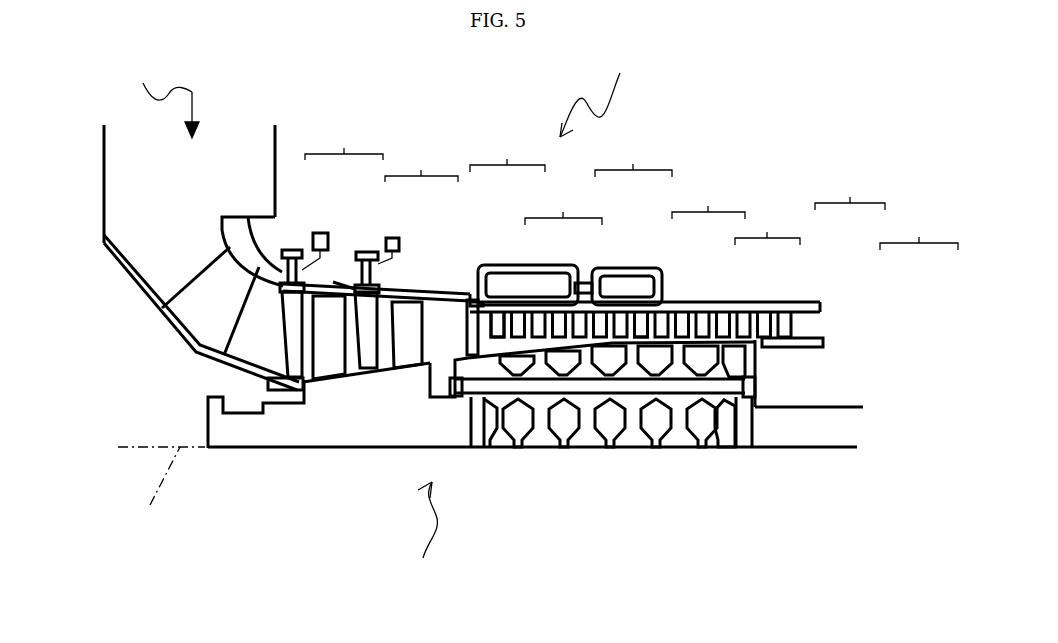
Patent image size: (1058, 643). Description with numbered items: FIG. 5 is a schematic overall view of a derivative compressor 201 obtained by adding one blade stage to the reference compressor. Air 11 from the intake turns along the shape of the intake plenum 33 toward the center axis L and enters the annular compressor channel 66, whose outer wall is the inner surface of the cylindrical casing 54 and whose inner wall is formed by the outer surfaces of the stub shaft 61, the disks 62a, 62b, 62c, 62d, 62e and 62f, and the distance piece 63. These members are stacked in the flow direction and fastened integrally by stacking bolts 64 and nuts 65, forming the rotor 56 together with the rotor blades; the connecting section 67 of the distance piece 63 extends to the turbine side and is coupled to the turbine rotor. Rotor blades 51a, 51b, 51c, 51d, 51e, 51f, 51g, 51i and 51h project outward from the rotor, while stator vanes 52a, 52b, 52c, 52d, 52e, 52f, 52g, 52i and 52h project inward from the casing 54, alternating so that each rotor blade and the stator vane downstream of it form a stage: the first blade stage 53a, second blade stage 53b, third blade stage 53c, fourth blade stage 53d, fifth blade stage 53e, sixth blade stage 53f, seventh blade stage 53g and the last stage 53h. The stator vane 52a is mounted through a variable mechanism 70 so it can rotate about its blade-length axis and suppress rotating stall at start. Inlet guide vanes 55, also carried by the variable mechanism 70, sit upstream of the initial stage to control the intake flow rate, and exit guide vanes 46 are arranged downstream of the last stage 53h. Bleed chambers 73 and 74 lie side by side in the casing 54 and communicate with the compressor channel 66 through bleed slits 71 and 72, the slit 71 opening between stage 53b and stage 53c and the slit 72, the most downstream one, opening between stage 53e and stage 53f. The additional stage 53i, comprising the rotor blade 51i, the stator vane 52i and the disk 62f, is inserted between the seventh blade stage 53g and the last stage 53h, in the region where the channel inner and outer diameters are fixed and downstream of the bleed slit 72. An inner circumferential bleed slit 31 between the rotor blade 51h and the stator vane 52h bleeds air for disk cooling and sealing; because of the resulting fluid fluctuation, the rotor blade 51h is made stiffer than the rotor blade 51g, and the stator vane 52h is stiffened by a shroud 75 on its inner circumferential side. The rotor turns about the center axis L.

The air 11 is at (163, 100).
The turbine 201 is at (605, 93).
The intake plenum 33 is at (104, 185).
The first blade stage 53a is at (333, 252).
The second blade stage 53b is at (407, 257).
The third blade stage 53c is at (507, 238).
The fourth blade stage 53d is at (563, 263).
The fifth blade stage 53e is at (622, 239).
The sixth blade stage 53f is at (679, 260).
The seventh blade stage 53g is at (727, 274).
The additional stage 53i is at (790, 256).
The eighth blade stage 53h is at (847, 278).
The rotor blade 51a is at (295, 292).
The rotor blade 51b is at (368, 293).
The rotor blade 51c is at (498, 316).
The rotor blade 51d is at (539, 316).
The rotor blade 51e is at (580, 316).
The rotor blade 51f is at (621, 316).
The rotor blade 51g is at (662, 316).
The rotor blade 51i is at (703, 316).
The rotor blade 51h is at (744, 316).
The stator vane 52a is at (330, 296).
The stator vane 52b is at (408, 302).
The stator vane 52c is at (519, 316).
The stator vane 52d is at (560, 316).
The stator vane 52e is at (601, 316).
The stator vane 52f is at (642, 316).
The stator vane 52g is at (683, 316).
The stator vane 52i is at (724, 316).
The stator vane 52h is at (765, 340).
The variable mechanism 70 is at (292, 250).
The casing 54 is at (432, 285).
The bleed slit 71 is at (472, 300).
The bleed chamber 73 is at (515, 283).
The bleed slit 72 is at (626, 290).
The bleed chamber 74 is at (640, 312).
The compressor channel 66 is at (452, 344).
The exit guide vanes 46 is at (825, 306).
The shroud 75 is at (825, 345).
The inner circumferential bleed slit 31 is at (757, 347).
The inlet guide vanes 55 is at (285, 355).
The stub shaft 61 is at (350, 450).
The stacking bolts 64 is at (440, 410).
The rotor 56 is at (423, 531).
The disk 62a is at (490, 450).
The disk 62b is at (531, 450).
The disk 62c is at (583, 450).
The disk 62d is at (628, 450).
The disk 62e is at (677, 450).
The disk 62f is at (720, 450).
The distance piece 63 is at (762, 450).
The nuts 65 is at (752, 408).
The connecting section 67 is at (843, 425).
The center axis L is at (161, 487).